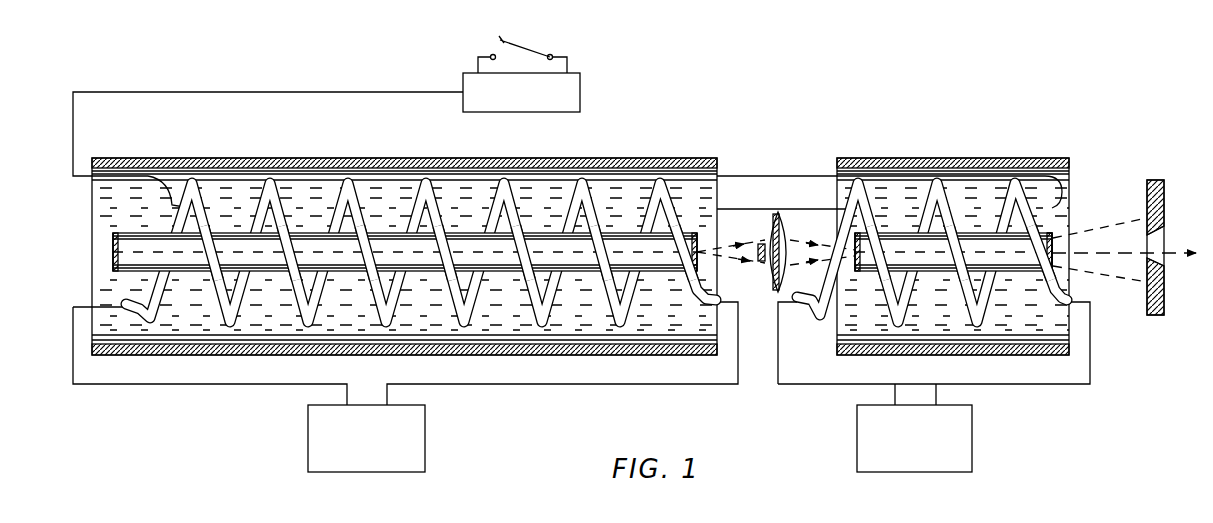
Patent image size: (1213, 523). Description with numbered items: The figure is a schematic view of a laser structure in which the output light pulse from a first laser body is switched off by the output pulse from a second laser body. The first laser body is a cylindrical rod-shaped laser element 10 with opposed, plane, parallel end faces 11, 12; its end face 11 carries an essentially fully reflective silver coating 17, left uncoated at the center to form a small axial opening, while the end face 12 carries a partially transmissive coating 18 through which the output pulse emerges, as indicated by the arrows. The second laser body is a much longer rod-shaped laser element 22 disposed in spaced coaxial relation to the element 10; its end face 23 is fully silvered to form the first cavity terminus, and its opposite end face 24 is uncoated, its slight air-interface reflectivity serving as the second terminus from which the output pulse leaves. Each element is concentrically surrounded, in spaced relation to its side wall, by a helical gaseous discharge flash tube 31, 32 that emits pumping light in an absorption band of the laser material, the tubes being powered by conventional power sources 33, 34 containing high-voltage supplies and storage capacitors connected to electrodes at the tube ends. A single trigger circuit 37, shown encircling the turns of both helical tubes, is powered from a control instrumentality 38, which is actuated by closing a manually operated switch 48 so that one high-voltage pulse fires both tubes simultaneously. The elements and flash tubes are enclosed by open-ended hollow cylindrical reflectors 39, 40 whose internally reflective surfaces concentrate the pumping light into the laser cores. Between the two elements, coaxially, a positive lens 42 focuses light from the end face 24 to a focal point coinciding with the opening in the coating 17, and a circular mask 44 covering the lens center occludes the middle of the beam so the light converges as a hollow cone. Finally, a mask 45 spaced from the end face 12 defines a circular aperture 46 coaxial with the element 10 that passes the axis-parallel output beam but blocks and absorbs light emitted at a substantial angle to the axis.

The rod-shaped laser element 10 is at (1043, 298).
The end face 11 is at (858, 250).
The end face 12 is at (1053, 238).
The coating 17 is at (857, 263).
The coating 18 is at (1055, 258).
The rod-shaped laser element 22 is at (353, 272).
The end face 23 is at (113, 246).
The end face 24 is at (700, 240).
The helical gaseous discharge flash tube 31 is at (906, 308).
The helical gaseous discharge flash tube 32 is at (476, 300).
The power source 33 is at (972, 448).
The power source 34 is at (425, 448).
The trigger circuit 37 is at (769, 176).
The control instrumentality 38 is at (582, 92).
The hollow cylindrical reflector 39 is at (952, 157).
The hollow cylindrical reflector 40 is at (558, 157).
The positive lens 42 is at (790, 236).
The mask 44 is at (754, 251).
The mask 45 is at (1164, 201).
The aperture 46 is at (1164, 241).
The switch 48 is at (528, 48).